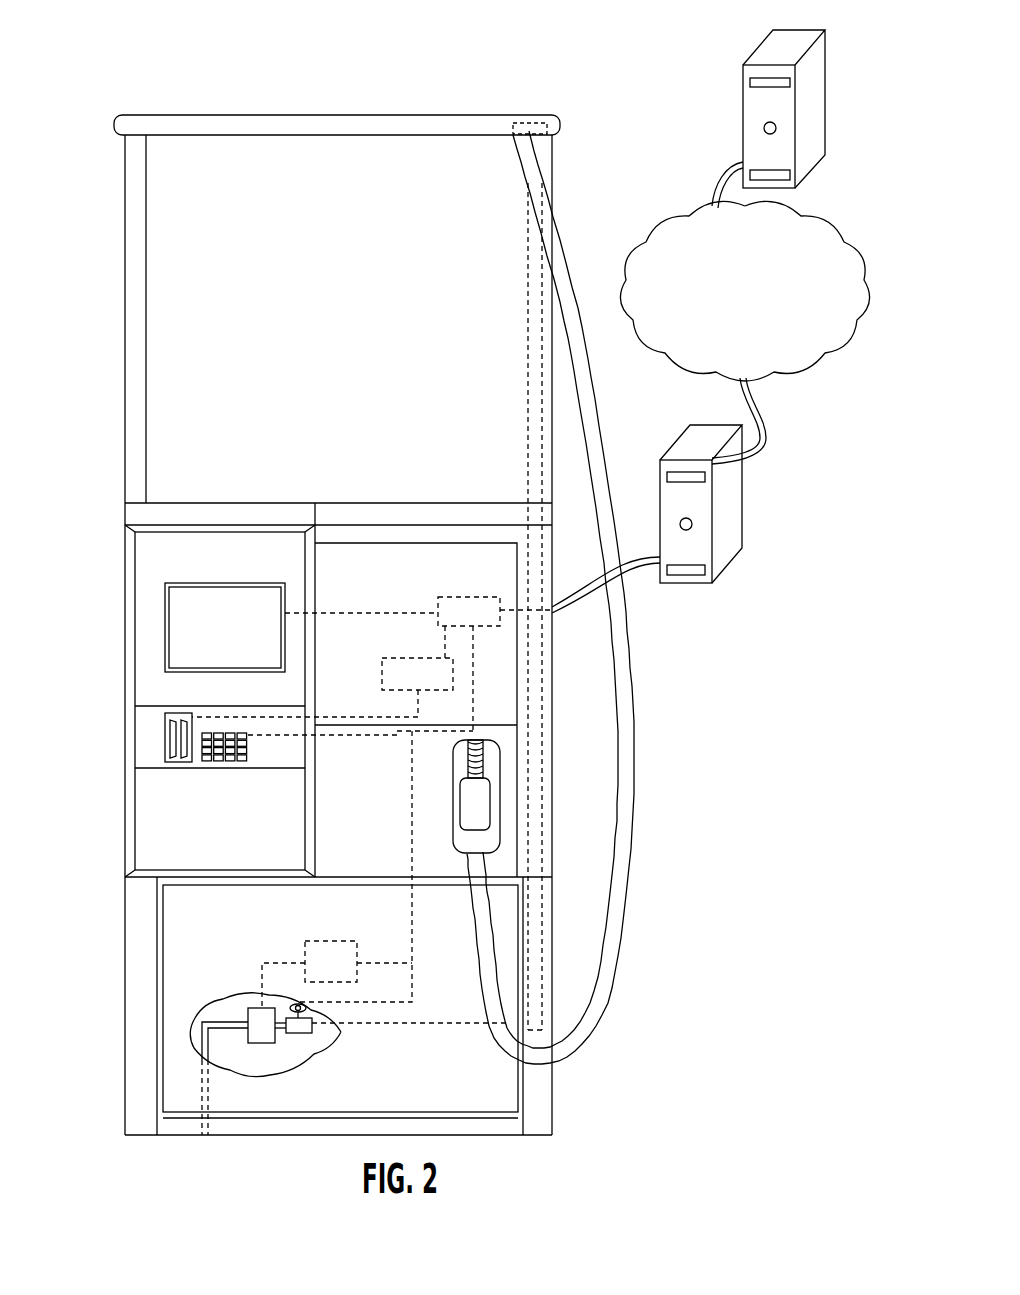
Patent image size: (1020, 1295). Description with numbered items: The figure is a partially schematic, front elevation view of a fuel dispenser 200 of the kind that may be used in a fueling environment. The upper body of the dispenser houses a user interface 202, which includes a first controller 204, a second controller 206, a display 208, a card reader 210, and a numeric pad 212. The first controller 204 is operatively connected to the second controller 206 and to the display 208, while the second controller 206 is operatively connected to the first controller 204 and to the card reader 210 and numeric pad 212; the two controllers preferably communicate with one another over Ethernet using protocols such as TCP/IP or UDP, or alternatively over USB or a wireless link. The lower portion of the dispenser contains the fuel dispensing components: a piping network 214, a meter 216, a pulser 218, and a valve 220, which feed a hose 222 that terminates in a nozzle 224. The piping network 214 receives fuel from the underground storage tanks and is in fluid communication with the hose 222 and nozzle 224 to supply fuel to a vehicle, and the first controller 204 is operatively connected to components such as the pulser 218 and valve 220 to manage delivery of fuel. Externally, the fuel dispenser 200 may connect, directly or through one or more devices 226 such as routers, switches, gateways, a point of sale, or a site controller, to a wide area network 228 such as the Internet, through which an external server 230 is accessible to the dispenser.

The fuel dispenser 200 is at (576, 90).
The user interface 202 is at (184, 520).
The first controller 204 is at (485, 625).
The second controller 206 is at (433, 686).
The display 208 is at (241, 637).
The card reader 210 is at (160, 737).
The numeric pad 212 is at (196, 748).
The piping network 214 is at (190, 1046).
The meter 216 is at (262, 1043).
The pulser 218 is at (327, 941).
The valve 220 is at (306, 1035).
The hose 222 is at (630, 697).
The nozzle 224 is at (490, 797).
The devices 226 is at (720, 570).
The wide area network 228 is at (760, 304).
The server 230 is at (830, 125).